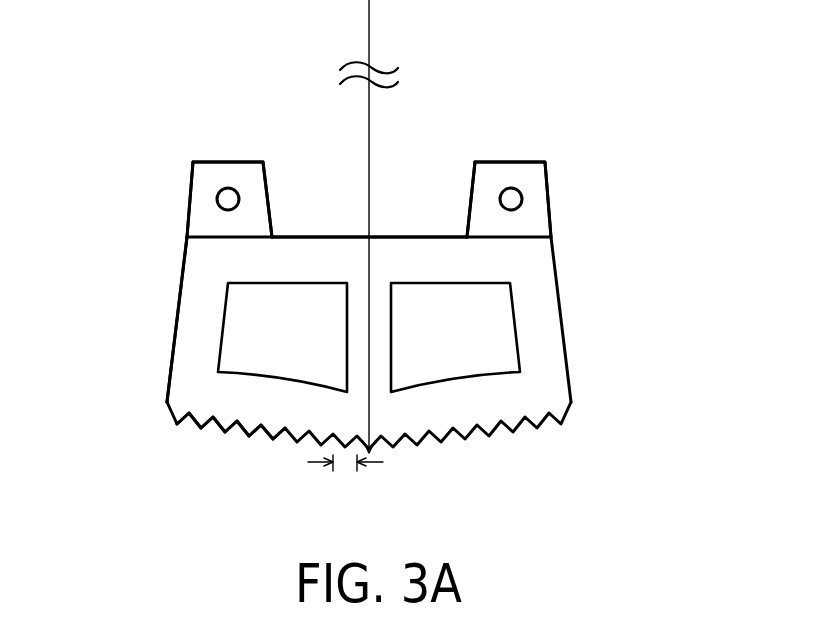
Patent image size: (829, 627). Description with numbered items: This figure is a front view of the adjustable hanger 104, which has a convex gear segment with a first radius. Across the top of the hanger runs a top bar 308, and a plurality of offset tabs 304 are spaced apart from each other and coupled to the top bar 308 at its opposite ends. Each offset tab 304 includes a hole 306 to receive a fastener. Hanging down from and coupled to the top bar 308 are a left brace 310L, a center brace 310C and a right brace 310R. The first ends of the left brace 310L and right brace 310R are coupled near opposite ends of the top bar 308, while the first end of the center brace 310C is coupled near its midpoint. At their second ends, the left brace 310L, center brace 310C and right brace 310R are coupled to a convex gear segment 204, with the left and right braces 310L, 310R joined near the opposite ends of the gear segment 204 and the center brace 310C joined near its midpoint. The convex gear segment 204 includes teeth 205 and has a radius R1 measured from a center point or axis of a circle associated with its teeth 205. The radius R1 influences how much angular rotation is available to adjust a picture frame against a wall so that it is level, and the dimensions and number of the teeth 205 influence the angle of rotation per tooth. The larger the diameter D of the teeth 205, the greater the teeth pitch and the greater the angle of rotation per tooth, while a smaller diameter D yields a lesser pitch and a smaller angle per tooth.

The adjustable hanger 104 is at (377, 306).
The convex gear segment 204 is at (510, 412).
The teeth 205 is at (235, 441).
The offset tabs 304 is at (200, 210).
The hole 306 is at (228, 199).
The top bar 308 is at (335, 257).
The left brace 310L is at (195, 332).
The center brace 310C is at (358, 338).
The right brace 310R is at (528, 330).
The diameter of the teeth D is at (343, 473).
The radius R1 is at (376, 226).